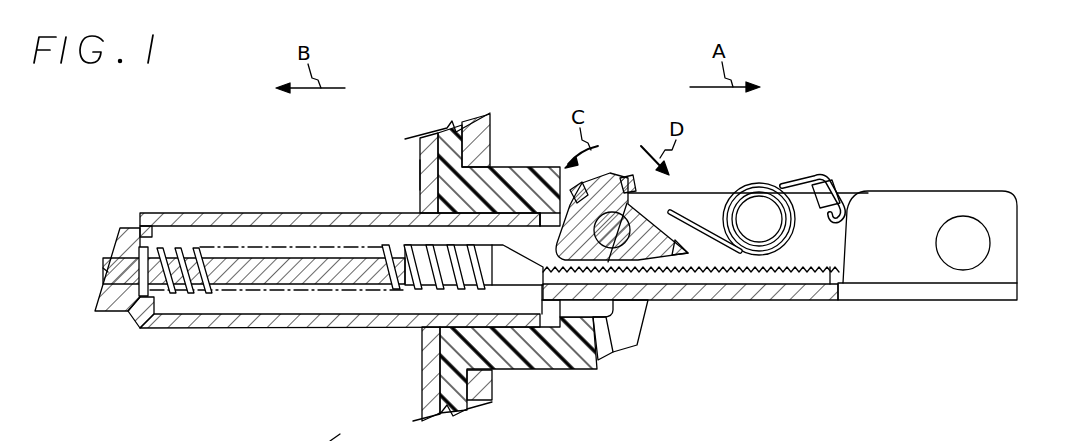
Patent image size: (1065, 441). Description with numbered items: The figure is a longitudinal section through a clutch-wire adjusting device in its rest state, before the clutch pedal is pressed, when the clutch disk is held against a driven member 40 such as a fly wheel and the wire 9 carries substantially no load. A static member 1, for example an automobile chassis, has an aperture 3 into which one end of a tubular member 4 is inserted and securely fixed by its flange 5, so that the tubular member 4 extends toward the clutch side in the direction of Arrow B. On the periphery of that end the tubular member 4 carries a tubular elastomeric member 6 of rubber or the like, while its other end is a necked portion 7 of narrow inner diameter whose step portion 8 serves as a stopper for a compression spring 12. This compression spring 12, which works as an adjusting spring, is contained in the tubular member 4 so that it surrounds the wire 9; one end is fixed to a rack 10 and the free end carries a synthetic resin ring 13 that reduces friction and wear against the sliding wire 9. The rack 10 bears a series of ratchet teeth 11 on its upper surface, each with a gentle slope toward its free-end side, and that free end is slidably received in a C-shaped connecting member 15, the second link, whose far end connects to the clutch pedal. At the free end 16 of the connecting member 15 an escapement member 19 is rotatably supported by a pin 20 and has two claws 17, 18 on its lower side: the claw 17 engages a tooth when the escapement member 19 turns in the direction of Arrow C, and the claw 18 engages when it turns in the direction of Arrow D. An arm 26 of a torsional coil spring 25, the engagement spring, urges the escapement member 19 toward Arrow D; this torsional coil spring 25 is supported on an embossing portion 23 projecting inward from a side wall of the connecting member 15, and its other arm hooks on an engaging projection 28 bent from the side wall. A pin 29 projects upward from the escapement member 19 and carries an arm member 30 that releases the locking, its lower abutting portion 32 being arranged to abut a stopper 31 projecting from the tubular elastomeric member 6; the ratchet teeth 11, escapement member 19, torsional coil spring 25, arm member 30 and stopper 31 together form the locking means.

The static member 1 is at (489, 165).
The aperture 3 is at (498, 177).
The tubular member 4 is at (273, 214).
The flange 5 is at (428, 172).
The tubular elastomeric member 6 is at (528, 177).
The necked portion 7 is at (96, 312).
The step portion 8 is at (154, 292).
The wire 9 is at (216, 240).
The rack 10 is at (660, 292).
The ratchet teeth 11 is at (750, 185).
The compression spring 12 is at (392, 284).
The ring 13 is at (132, 220).
The connecting member 15 is at (918, 203).
The free end 16 is at (580, 184).
The claw 17 is at (557, 290).
The claw 18 is at (690, 255).
The escapement member 19 is at (687, 193).
The pin 20 is at (634, 217).
The embossing portion 23 is at (777, 185).
The torsional coil spring 25 is at (762, 207).
The arm 26 is at (724, 190).
The engaging projection 28 is at (843, 200).
The pin 29 is at (618, 212).
The arm member 30 is at (630, 345).
The stopper 31 is at (580, 330).
The abutting portion 32 is at (606, 342).
The driven member 40 is at (325, 440).